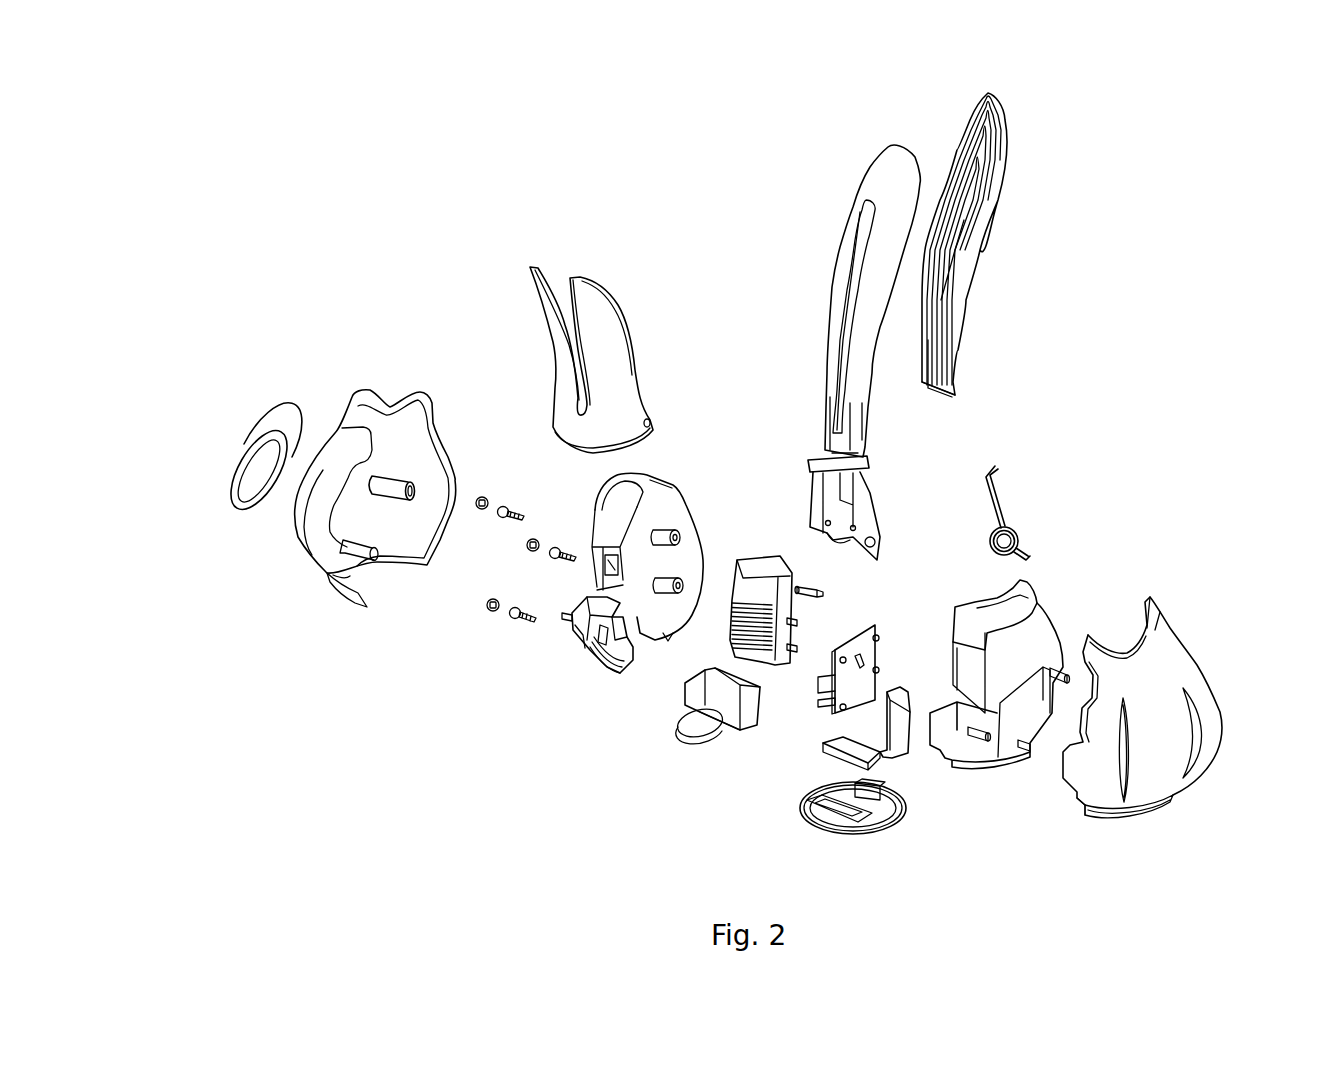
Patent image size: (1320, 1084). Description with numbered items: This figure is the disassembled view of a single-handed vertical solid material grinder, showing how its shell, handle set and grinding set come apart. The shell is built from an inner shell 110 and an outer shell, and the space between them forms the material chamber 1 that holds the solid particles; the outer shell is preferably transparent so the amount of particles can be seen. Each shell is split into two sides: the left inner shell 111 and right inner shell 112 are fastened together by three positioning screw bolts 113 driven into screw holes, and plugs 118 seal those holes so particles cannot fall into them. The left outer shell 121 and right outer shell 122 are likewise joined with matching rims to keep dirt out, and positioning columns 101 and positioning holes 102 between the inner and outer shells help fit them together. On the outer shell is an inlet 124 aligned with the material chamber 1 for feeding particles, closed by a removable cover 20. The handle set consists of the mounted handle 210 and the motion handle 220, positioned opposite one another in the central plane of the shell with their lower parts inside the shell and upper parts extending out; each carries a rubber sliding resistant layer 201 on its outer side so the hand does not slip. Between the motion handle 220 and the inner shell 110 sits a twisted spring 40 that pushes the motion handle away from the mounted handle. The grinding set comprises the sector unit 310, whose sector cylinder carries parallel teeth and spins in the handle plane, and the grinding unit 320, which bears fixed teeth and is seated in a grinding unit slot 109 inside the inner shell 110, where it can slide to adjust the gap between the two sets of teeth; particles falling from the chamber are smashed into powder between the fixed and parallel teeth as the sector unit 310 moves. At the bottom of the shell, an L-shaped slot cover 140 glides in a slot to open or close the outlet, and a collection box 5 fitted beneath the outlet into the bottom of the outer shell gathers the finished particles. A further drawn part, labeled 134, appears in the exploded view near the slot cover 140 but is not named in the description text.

The material chamber 1 is at (327, 503).
The collection box 5 is at (820, 828).
The removable cover 20 is at (250, 487).
The twisted spring 40 is at (1020, 522).
The positioning column 101 is at (1074, 712).
The positioning hole 102 is at (402, 482).
The grinding unit slot 109 is at (613, 633).
The inner shell 110 is at (560, 650).
The left inner shell 111 is at (600, 525).
The right inner shell 112 is at (1025, 615).
The positioning screw bolts 113 is at (552, 556).
The plugs 118 is at (530, 548).
The left outer shell 121 is at (312, 538).
The right outer shell 122 is at (1105, 725).
The inlet 124 is at (1073, 716).
The circuit board 134 is at (845, 682).
The slot cover 140 is at (850, 748).
The sliding resistant layer 201 is at (988, 192).
The mounted handle 210 is at (530, 266).
The motion handle 220 is at (868, 140).
The sector unit 310 is at (754, 582).
The grinding unit 320 is at (693, 687).